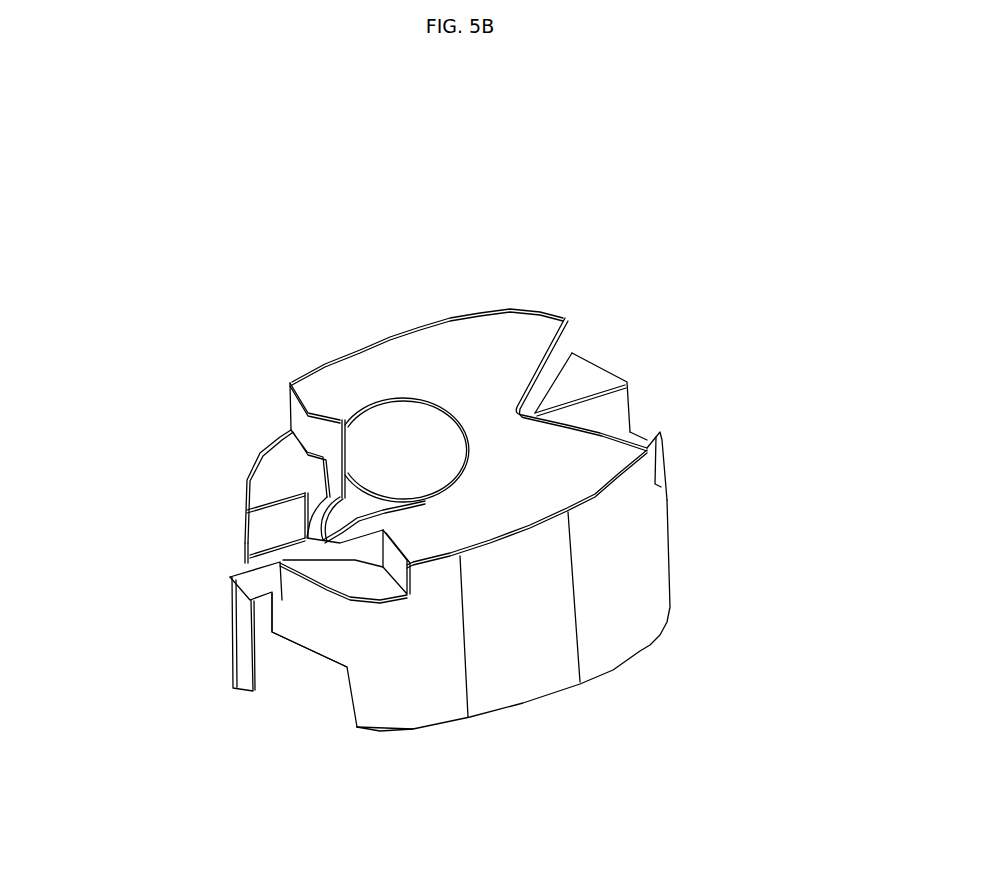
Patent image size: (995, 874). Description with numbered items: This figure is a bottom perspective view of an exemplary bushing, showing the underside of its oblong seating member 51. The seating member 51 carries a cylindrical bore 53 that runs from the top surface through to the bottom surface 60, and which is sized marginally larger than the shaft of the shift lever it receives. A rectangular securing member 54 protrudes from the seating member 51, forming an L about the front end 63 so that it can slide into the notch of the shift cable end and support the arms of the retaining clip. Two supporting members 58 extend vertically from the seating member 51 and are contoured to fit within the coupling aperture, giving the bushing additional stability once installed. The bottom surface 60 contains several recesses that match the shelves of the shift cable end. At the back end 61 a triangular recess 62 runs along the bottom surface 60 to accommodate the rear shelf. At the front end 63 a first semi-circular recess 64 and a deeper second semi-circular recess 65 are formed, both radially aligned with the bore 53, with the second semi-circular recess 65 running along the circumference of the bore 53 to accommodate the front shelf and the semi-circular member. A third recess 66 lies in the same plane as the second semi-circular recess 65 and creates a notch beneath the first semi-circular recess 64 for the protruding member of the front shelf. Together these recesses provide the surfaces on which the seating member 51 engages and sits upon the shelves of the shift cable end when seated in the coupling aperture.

The seating member 51 is at (618, 532).
The bore 53 is at (392, 445).
The securing member 54 is at (242, 653).
The supporting members 58 is at (428, 712).
The bottom surface 60 is at (447, 362).
The back end 61 is at (667, 490).
The triangular recess 62 is at (553, 360).
The front end 63 is at (320, 633).
The first semi-circular recess 64 is at (335, 562).
The second semi-circular recess 65 is at (338, 568).
The third recess 66 is at (277, 563).